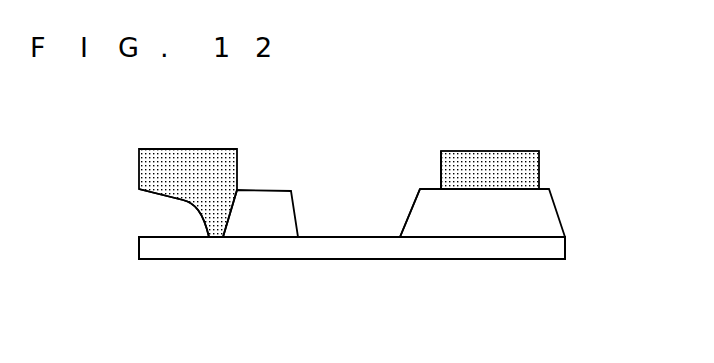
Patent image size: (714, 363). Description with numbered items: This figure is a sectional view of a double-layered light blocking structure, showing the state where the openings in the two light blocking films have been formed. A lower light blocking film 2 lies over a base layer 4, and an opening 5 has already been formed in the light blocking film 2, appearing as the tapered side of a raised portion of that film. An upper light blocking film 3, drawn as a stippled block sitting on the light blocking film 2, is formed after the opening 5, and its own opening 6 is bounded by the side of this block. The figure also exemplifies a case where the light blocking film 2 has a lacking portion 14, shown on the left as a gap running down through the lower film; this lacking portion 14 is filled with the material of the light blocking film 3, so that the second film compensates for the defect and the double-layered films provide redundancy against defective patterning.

The light blocking film 2 is at (540, 220).
The light blocking film 3 is at (532, 177).
The substrate 4 is at (540, 252).
The opening 5 is at (405, 218).
The opening 6 is at (440, 172).
The lacking portion 14 is at (212, 235).